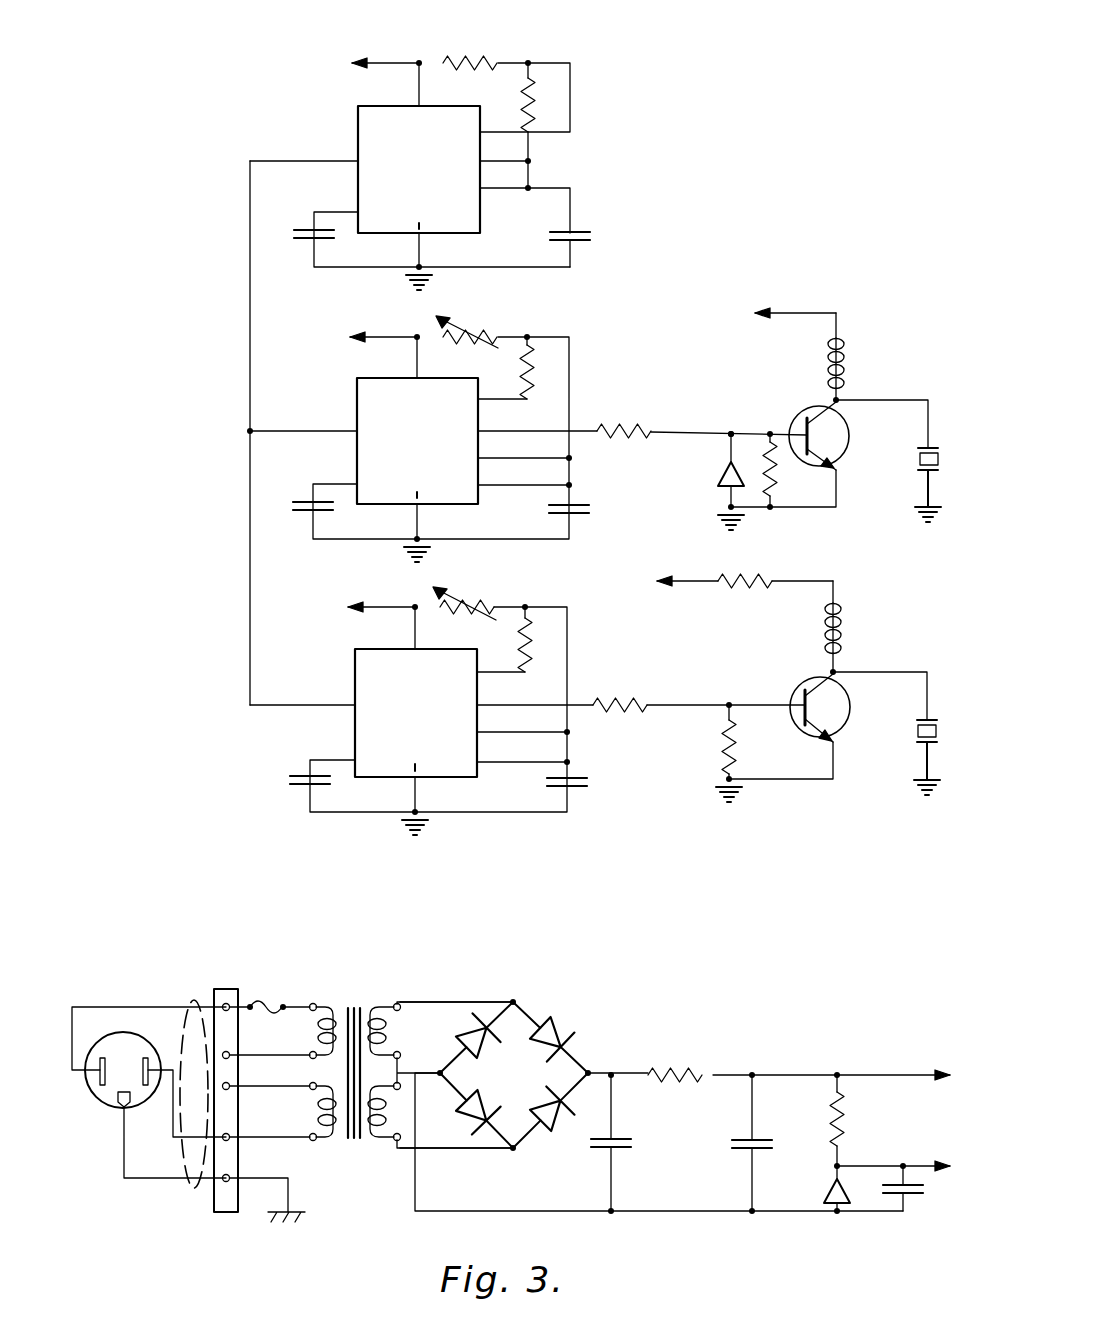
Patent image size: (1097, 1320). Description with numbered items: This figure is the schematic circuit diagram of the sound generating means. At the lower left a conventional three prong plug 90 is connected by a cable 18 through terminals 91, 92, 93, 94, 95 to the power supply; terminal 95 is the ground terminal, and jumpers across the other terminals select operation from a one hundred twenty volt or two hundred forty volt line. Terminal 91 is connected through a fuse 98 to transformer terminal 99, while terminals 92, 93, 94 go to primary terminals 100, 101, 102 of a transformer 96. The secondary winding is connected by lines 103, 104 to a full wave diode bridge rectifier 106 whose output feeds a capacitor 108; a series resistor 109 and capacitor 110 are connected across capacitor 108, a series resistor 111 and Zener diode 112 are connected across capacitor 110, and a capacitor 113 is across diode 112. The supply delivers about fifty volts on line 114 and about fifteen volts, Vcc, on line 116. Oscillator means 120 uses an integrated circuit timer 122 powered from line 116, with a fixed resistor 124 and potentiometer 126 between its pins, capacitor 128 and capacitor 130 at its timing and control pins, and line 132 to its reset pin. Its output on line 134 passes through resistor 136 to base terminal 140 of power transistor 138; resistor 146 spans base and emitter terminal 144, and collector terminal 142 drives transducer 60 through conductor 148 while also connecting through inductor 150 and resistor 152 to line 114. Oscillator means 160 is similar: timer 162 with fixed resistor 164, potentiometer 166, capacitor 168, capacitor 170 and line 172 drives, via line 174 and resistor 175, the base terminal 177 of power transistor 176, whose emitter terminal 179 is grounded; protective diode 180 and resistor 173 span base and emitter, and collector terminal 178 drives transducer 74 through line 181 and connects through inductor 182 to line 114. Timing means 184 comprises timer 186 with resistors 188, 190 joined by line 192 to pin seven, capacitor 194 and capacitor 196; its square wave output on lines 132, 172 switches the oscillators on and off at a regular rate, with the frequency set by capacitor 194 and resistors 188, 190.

The cable 18 is at (200, 1000).
The three prong plug 90 is at (94, 1104).
The terminal 91 is at (228, 1002).
The terminal 92 is at (230, 1052).
The terminal 93 is at (230, 1084).
The terminal 94 is at (228, 1134).
The ground terminal 95 is at (230, 1176).
The transformer 96 is at (371, 1054).
The fuse 98 is at (262, 1004).
The transformer terminal 99 is at (314, 1004).
The transformer primary terminal 100 is at (316, 1050).
The transformer primary terminal 101 is at (330, 1078).
The transformer primary terminal 102 is at (312, 1142).
The line 103 is at (466, 960).
The line 104 is at (440, 1148).
The full wave diode bridge rectifier 106 is at (600, 960).
The capacitor 108 is at (582, 1148).
The resistor 109 is at (688, 1064).
The capacitor 110 is at (728, 1148).
The resistor 111 is at (834, 1108).
The Zener diode 112 is at (828, 1190).
The capacitor 113 is at (930, 1192).
The line 114 is at (806, 313).
The line 116 is at (382, 62).
The oscillator means 120 is at (577, 703).
The integrated circuit timer 122 is at (356, 652).
The fixed resistor 124 is at (523, 640).
The variable resistor or potentiometer 126 is at (472, 598).
The capacitor 128 is at (594, 790).
The capacitor 130 is at (288, 782).
The line 132 is at (270, 706).
The line 134 is at (546, 704).
The resistor 136 is at (625, 712).
The power transistor 138 is at (813, 710).
The base terminal 140 is at (734, 700).
The collector terminal 142 is at (836, 674).
The emitter terminal 144 is at (832, 736).
The resistor 146 is at (720, 760).
The conductor 148 is at (890, 672).
The inductor 150 is at (840, 616).
The resistor 152 is at (778, 586).
The transducer 60 is at (928, 712).
The oscillator means 160 is at (595, 430).
The integrated circuit timer 162 is at (358, 462).
The fixed resistor 164 is at (525, 370).
The variable resistor or potentiometer 166 is at (478, 324).
The capacitor 168 is at (592, 510).
The capacitor 170 is at (280, 512).
The line 172 is at (320, 428).
The resistor 173 is at (776, 484).
The line 174 is at (540, 430).
The resistor 175 is at (652, 402).
The power transistor 176 is at (827, 427).
The base terminal 177 is at (736, 430).
The collector terminal 178 is at (838, 398).
The emitter terminal 179 is at (832, 460).
The protective diode 180 is at (718, 476).
The line 181 is at (888, 400).
The inductor 182 is at (827, 362).
The transducer 74 is at (917, 463).
The timing means 184 is at (457, 155).
The integrated circuit timer device 186 is at (358, 122).
The fixed resistor 188 is at (526, 100).
The fixed resistor 190 is at (494, 42).
The line 192 is at (572, 88).
The capacitor 194 is at (592, 230).
The capacitor 196 is at (288, 232).